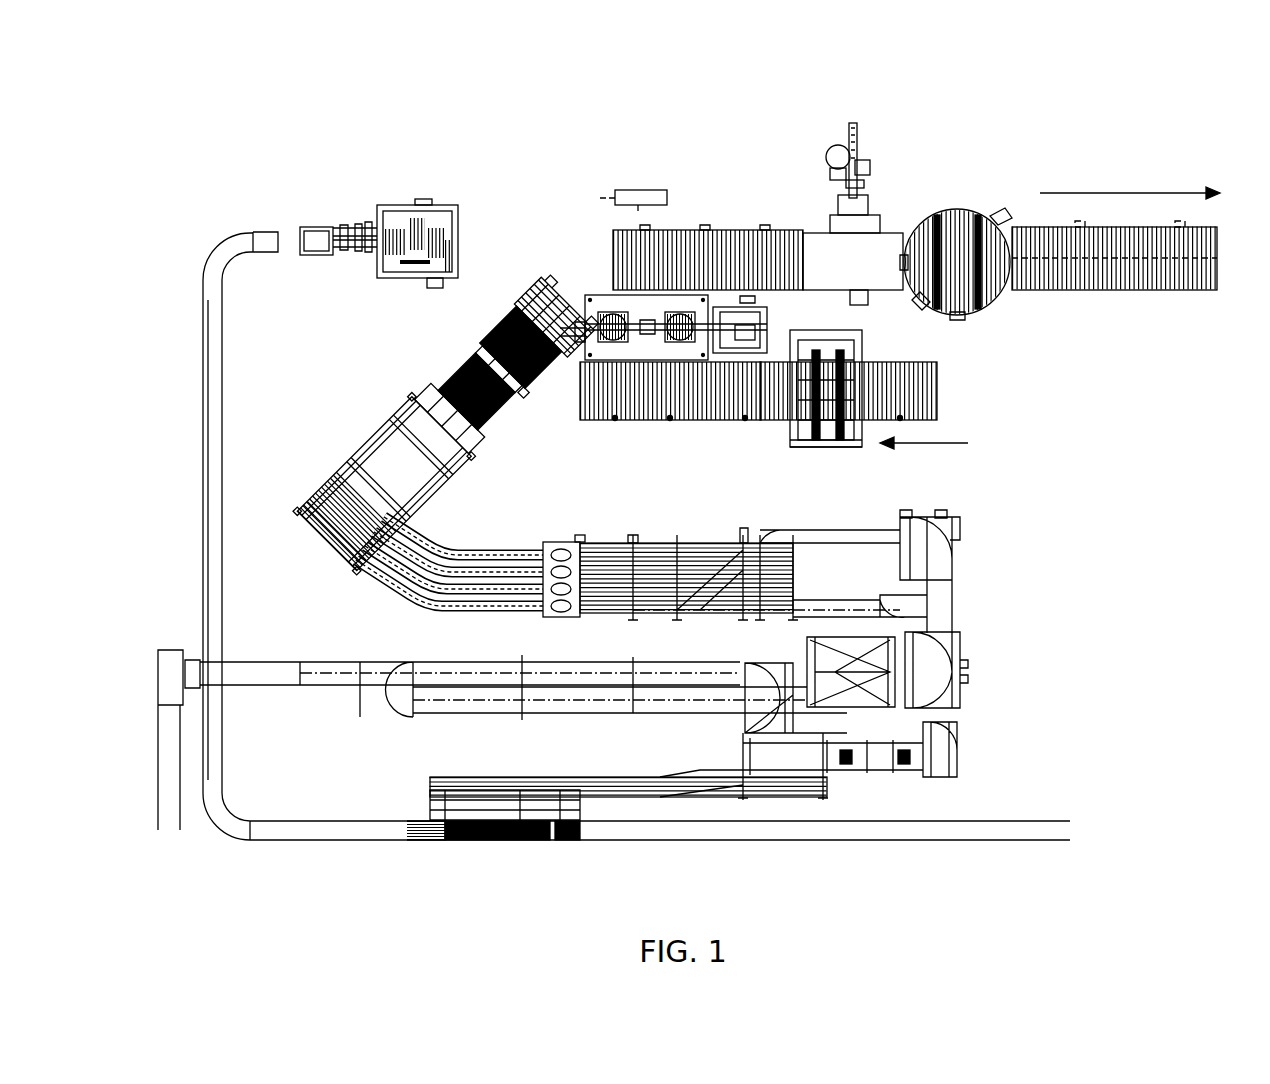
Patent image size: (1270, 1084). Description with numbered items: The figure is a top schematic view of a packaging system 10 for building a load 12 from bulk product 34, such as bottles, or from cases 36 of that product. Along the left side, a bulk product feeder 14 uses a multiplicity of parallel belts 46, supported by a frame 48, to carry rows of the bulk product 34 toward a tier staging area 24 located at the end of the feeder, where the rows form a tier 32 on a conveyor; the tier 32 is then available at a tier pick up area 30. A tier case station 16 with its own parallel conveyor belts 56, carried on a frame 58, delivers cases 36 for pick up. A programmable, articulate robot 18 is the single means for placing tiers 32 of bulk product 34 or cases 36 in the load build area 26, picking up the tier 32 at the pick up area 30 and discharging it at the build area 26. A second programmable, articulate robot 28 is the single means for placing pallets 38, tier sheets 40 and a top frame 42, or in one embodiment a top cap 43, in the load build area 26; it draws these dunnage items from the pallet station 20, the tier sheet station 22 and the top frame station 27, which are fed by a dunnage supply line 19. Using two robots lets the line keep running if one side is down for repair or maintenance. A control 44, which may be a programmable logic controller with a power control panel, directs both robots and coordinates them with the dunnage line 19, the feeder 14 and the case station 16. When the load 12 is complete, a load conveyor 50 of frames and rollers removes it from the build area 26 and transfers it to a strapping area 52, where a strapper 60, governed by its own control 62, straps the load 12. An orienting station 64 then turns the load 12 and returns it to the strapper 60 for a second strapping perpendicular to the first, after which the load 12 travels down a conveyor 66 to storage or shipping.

The system 10 is at (274, 120).
The load 12 is at (605, 305).
The bulk product feeder 14 is at (352, 468).
The tier case station 16 is at (406, 210).
The programmable, articulate robot 18 is at (638, 262).
The dunnage supply line 19 is at (937, 395).
The pallet station 20 is at (720, 428).
The tier sheet station 22 is at (684, 428).
The tier staging area 24 is at (447, 398).
The load build area 26 is at (628, 235).
The top frame station 27 is at (784, 412).
The programmable, articulate robot 28 is at (700, 300).
The tier pick up area 30 is at (488, 352).
The tier 32 is at (532, 290).
The bulk product 34 is at (502, 310).
The case 36 is at (387, 205).
The pallet 38 is at (600, 422).
The tier sheet 40 is at (760, 391).
The top frame 42 is at (826, 388).
The top cap 43 is at (826, 388).
The control 44 is at (668, 190).
The belts 46 is at (443, 557).
The frame 48 is at (541, 627).
The load conveyor 50 is at (760, 236).
The strapping area 52 is at (890, 282).
The conveyor belts 56 is at (302, 230).
The frame 58 is at (305, 262).
The strapper 60 is at (857, 145).
The control 62 is at (826, 150).
The orienting station 64 is at (950, 215).
The conveyor 66 is at (1180, 290).